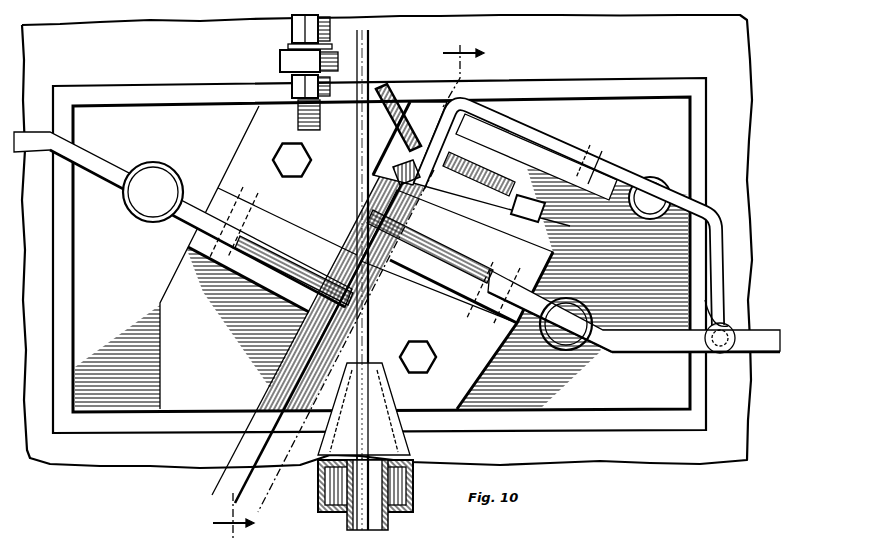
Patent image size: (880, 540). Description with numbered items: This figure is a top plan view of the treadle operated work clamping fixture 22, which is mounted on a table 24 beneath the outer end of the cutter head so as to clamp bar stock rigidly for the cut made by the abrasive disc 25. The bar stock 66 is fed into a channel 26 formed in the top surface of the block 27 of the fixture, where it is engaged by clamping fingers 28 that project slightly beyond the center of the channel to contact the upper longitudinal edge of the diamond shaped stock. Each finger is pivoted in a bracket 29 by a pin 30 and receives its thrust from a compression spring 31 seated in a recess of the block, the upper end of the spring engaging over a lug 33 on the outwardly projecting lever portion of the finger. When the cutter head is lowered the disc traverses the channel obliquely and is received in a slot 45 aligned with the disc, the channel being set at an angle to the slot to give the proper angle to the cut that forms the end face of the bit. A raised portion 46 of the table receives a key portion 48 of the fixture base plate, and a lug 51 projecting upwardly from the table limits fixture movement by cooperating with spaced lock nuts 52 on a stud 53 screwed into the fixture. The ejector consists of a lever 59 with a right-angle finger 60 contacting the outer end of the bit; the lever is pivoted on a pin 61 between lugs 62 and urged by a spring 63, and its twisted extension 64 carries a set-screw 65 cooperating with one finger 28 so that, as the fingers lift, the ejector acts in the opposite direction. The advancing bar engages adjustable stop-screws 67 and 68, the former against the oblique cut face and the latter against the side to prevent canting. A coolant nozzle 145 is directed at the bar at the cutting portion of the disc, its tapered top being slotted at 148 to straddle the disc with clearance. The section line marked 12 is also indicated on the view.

The section line 12- 12 is at (358, 292).
The work clamping fixture 22 is at (190, 108).
The table 24 is at (133, 470).
The abrasive disc 25 is at (366, 40).
The channel 26 is at (276, 380).
The block 27 is at (162, 306).
The clamping fingers 28 is at (308, 252).
The bracket 29 is at (268, 222).
The pin 30 is at (237, 198).
The compression spring 31 is at (140, 218).
The lug 33 is at (185, 204).
The slot 45 is at (362, 344).
The raised portion 46 is at (127, 92).
The key portion 48 is at (360, 534).
The lug 51 is at (280, 61).
The lock nuts 52 is at (292, 24).
The stud 53 is at (288, 46).
The lever 59 is at (528, 134).
The finger 60 is at (481, 193).
The pin 61 is at (592, 150).
The lugs 62 is at (606, 160).
The spring 63 is at (656, 180).
The extension 64 is at (736, 318).
The set-screw 65 is at (736, 335).
The bar stock 66 is at (300, 470).
The stop-screw 67 is at (410, 134).
The stop-screw 68 is at (460, 154).
The nozzle 145 is at (408, 441).
The slot 148 is at (372, 387).